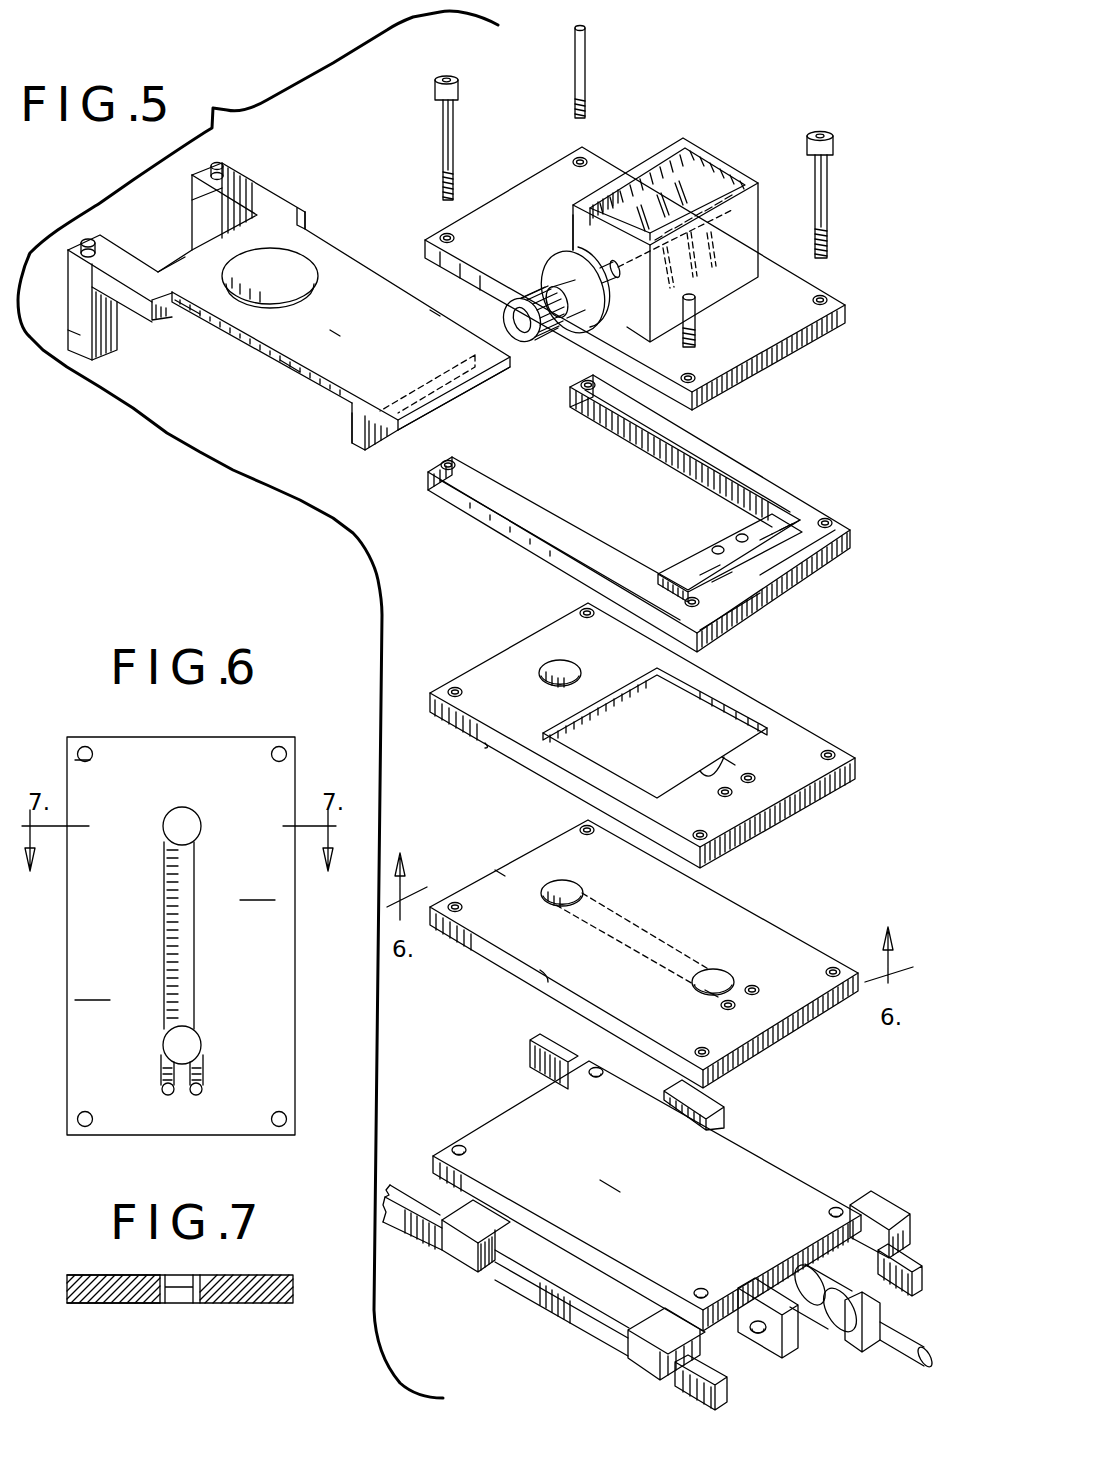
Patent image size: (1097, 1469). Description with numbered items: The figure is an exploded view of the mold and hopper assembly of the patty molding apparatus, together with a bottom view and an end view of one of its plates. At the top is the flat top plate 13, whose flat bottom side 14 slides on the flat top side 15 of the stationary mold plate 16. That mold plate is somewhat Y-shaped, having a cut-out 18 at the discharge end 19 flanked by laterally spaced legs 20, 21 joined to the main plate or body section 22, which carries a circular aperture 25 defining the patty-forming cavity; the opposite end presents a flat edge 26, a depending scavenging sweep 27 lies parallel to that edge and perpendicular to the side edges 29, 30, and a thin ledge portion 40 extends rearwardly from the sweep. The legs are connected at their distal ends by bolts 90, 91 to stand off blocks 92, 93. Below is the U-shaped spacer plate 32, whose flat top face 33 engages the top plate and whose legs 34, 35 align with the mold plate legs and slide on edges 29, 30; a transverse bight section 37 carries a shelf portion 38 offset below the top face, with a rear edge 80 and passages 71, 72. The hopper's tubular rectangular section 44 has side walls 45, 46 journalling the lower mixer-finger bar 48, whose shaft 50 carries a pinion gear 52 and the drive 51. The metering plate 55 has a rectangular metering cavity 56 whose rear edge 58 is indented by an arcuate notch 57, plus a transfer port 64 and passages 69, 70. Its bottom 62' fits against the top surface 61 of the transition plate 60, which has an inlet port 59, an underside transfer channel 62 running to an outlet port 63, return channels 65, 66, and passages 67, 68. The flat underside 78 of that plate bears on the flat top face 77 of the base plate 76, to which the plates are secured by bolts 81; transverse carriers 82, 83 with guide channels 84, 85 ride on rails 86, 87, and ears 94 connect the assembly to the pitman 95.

In FIG. 5, the flat top plate 13 is at (793, 293).
In FIG. 5, the flat bottom side 14 is at (462, 278).
In FIG. 5, the flat top side 15 is at (363, 307).
In FIG. 5, the stationary mold plate 16 is at (243, 173).
In FIG. 5, the cut-out 18 is at (185, 255).
In FIG. 5, the discharge end 19 is at (208, 297).
In FIG. 5, the leg 20 is at (135, 277).
In FIG. 5, the leg 21 is at (285, 205).
In FIG. 5, the main plate or body section 22 is at (402, 357).
In FIG. 5, the circular aperture 25 is at (300, 258).
In FIG. 5, the flat edge 26 is at (470, 382).
In FIG. 5, the scavenging sweep 27 is at (357, 445).
In FIG. 5, the vertical side edge 29 is at (293, 367).
In FIG. 5, the vertical side edge 30 is at (438, 305).
In FIG. 5, the U-shaped spacer plate 32 is at (788, 575).
In FIG. 5, the flat top face 33 is at (785, 497).
In FIG. 5, the leg 34 is at (497, 493).
In FIG. 5, the leg 35 is at (613, 425).
In FIG. 5, the transverse bight section 37 is at (730, 580).
In FIG. 5, the shelf portion 38 is at (670, 567).
In FIG. 5, the thin ledge portion 40 is at (432, 385).
In FIG. 5, the tubular rectangular section 44 is at (745, 230).
In FIG. 5, the side wall 45 is at (730, 160).
In FIG. 5, the side wall 46 is at (580, 223).
In FIG. 5, the lower mixer-finger bar 48 is at (650, 193).
In FIG. 5, the lower shaft 50 is at (557, 287).
In FIG. 5, the belt and pulley or chain and sprocket drive 51 is at (583, 317).
In FIG. 5, the pinion gear 52 is at (533, 337).
In FIG. 5, the metering plate 55 is at (855, 768).
In FIG. 5, the metering cavity 56 is at (725, 715).
In FIG. 5, the arcuate notch 57 is at (712, 777).
In FIG. 5, the rear edge 58 is at (738, 753).
In FIG. 5, the inlet port 59 is at (725, 975).
In FIG. 6, the inlet port 59 is at (188, 1047).
In FIG. 5, the transition plate 60 is at (757, 1053).
In FIG. 6, the transition plate 60 is at (240, 747).
In FIG. 7, the transition plate 60 is at (257, 1275).
In FIG. 5, the top surface 61 is at (500, 877).
In FIG. 7, the top surface 61 is at (107, 1275).
In FIG. 5, the transfer channel 62 is at (633, 939).
In FIG. 6, the transfer channel 62 is at (210, 935).
In FIG. 7, the transfer channel 62 is at (181, 1316).
In FIG. 5, the bottom of the metering plate 62' is at (510, 722).
In FIG. 5, the outlet port 63 is at (588, 873).
In FIG. 6, the outlet port 63 is at (178, 820).
In FIG. 5, the transfer port 64 is at (552, 665).
In FIG. 5, the channel 65 is at (713, 1000).
In FIG. 5, the channel 66 is at (742, 982).
In FIG. 5, the passage 67 is at (737, 1010).
In FIG. 6, the passage 67 is at (200, 1087).
In FIG. 5, the passage 68 is at (762, 993).
In FIG. 6, the passage 68 is at (164, 1087).
In FIG. 5, the passage 69 is at (727, 793).
In FIG. 5, the passage 70 is at (753, 780).
In FIG. 5, the passage 71 is at (717, 543).
In FIG. 5, the passage 72 is at (742, 535).
In FIG. 5, the base plate 76 is at (477, 1136).
In FIG. 5, the flat top face 77 is at (673, 1199).
In FIG. 5, the flat underside 78 is at (547, 977).
In FIG. 6, the flat underside 78 is at (283, 1045).
In FIG. 7, the flat underside 78 is at (115, 1303).
In FIG. 5, the rear edge of the ledge portion 80 is at (773, 532).
In FIG. 5, the bolts 81 is at (575, 70).
In FIG. 5, the transverse carrier 82 is at (470, 1212).
In FIG. 5, the transverse carrier 83 is at (657, 1337).
In FIG. 5, the guide channel 84 is at (499, 1265).
In FIG. 5, the guide channel 85 is at (868, 1243).
In FIG. 5, the guide or rail 86 is at (408, 1217).
In FIG. 5, the guide or rail 87 is at (540, 1056).
In FIG. 5, the bolt 90 is at (220, 160).
In FIG. 5, the bolt 91 is at (77, 233).
In FIG. 5, the stand off block or support 92 is at (83, 315).
In FIG. 5, the stand off block or support 93 is at (200, 210).
In FIG. 5, the ear 94 is at (752, 1292).
In FIG. 5, the pitman 95 is at (896, 1368).